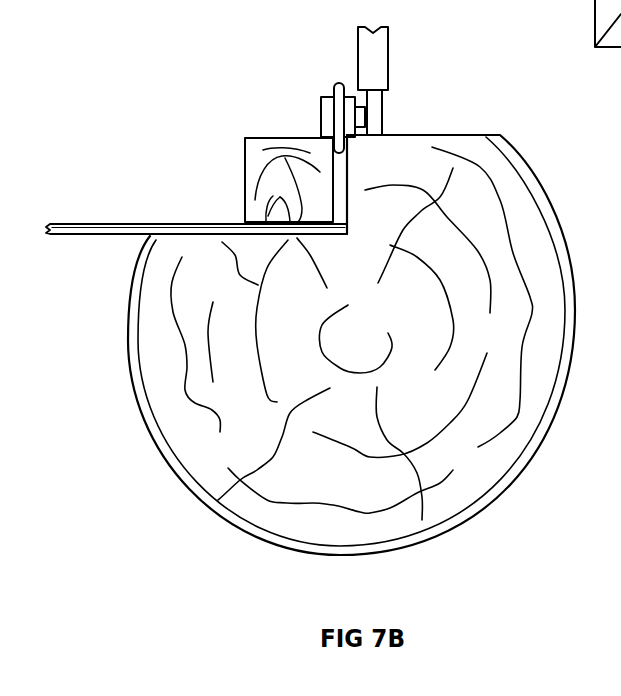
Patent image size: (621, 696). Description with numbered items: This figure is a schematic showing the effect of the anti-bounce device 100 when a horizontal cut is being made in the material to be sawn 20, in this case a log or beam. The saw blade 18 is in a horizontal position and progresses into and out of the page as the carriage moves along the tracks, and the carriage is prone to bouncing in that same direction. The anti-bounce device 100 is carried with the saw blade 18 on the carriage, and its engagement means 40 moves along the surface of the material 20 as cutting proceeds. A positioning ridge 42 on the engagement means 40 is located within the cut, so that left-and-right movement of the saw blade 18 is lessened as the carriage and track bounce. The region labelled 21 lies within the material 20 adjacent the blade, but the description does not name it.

The saw blade 18 is at (108, 223).
The material to be sawn 20 is at (473, 203).
The product portion in guide window 21 is at (266, 210).
The engagement means 40 is at (328, 86).
The positioning ridge 42 is at (316, 135).
The anti-bounce device 100 is at (396, 60).